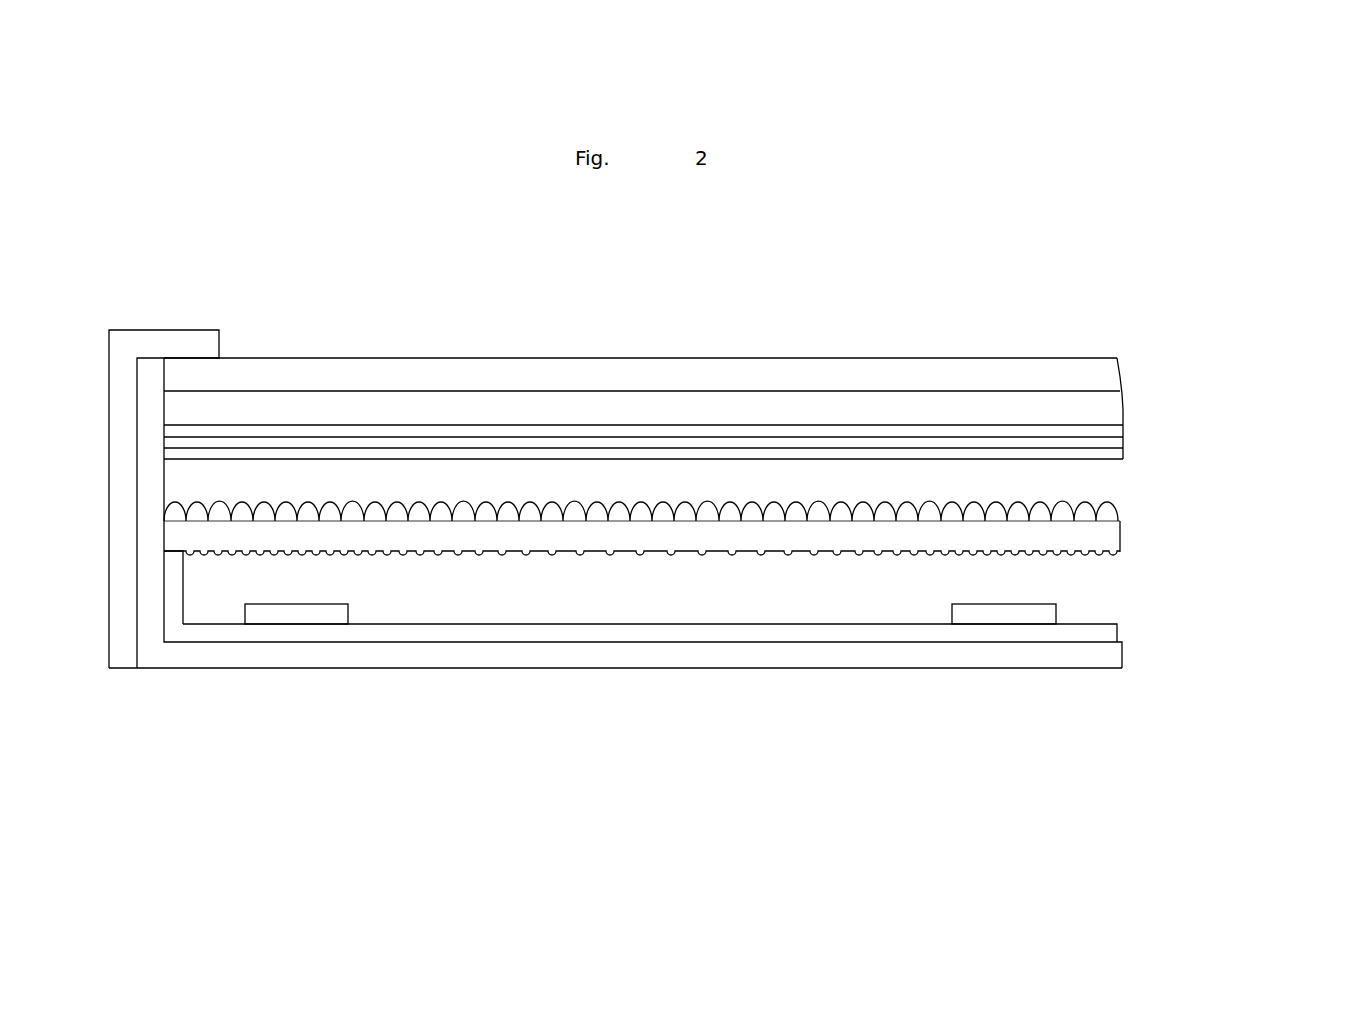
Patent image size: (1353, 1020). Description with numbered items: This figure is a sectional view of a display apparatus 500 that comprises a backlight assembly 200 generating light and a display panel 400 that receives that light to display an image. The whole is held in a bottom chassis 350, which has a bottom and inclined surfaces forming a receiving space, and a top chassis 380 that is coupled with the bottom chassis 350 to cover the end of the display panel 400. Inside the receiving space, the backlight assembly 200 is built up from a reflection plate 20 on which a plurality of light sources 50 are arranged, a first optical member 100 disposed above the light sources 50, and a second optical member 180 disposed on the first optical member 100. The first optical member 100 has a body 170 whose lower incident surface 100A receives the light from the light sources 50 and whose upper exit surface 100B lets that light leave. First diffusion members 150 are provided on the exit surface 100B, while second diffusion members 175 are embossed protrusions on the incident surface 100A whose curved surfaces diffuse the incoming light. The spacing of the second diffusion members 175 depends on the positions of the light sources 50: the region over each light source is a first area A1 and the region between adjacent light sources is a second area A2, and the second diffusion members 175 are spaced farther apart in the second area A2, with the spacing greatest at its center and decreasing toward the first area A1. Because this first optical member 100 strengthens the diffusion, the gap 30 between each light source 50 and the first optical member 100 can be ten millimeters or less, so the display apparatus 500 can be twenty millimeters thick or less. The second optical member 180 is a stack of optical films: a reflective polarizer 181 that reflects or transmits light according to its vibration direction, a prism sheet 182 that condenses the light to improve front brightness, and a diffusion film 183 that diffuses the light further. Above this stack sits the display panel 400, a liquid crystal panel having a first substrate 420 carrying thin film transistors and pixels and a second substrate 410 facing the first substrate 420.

The display apparatus 500 is at (1096, 282).
The display panel 400 is at (715, 388).
The second substrate 410 is at (1105, 366).
The first substrate 420 is at (1105, 403).
The second optical member 180 is at (715, 455).
The reflective polarizer 181 is at (1120, 459).
The prism sheet 182 is at (1112, 443).
The diffusion film 183 is at (1108, 431).
The first optical member 100 is at (715, 555).
The first diffusion members 150 is at (1120, 505).
The body 170 is at (1108, 533).
The second diffusion members 175 is at (1112, 552).
The incident surface 100A is at (681, 553).
The exit surface 100B is at (783, 522).
The backlight assembly 200 is at (748, 546).
The light sources 50 is at (1050, 612).
The reflection plate 20 is at (1108, 632).
The gap between light source and optical member 30 is at (296, 558).
The bottom chassis 350 is at (183, 660).
The top chassis 380 is at (124, 660).
The first area A1 is at (1056, 736).
The second area A2 is at (348, 736).